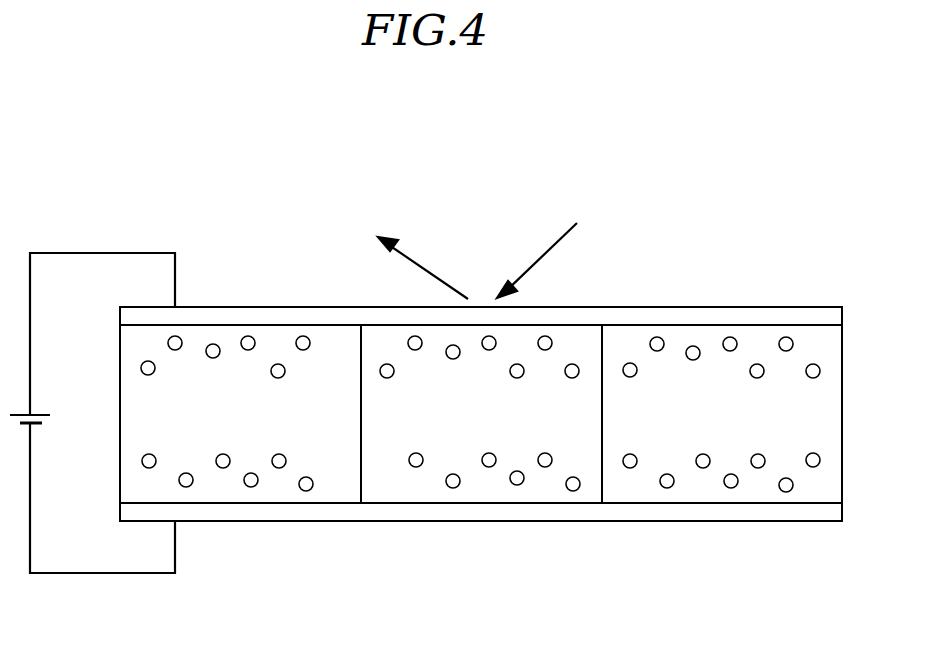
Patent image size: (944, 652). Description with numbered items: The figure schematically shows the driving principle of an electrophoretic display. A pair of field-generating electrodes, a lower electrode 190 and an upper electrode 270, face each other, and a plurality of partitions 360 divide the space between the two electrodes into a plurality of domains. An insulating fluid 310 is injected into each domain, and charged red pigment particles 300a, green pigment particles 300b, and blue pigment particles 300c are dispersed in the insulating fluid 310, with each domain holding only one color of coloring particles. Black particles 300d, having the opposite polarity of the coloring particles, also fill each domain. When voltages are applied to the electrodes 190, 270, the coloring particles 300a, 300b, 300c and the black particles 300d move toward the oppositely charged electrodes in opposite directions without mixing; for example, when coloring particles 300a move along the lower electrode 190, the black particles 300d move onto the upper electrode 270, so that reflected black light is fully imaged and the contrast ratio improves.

The lower electrode 190 is at (693, 515).
The upper electrode 270 is at (800, 320).
The red pigment particles 300a is at (306, 492).
The green pigment particles 300b is at (548, 337).
The blue pigment particles 300c is at (730, 337).
The black particles 300d is at (249, 336).
The insulating fluid 310 is at (797, 415).
The partitions 360 is at (362, 482).